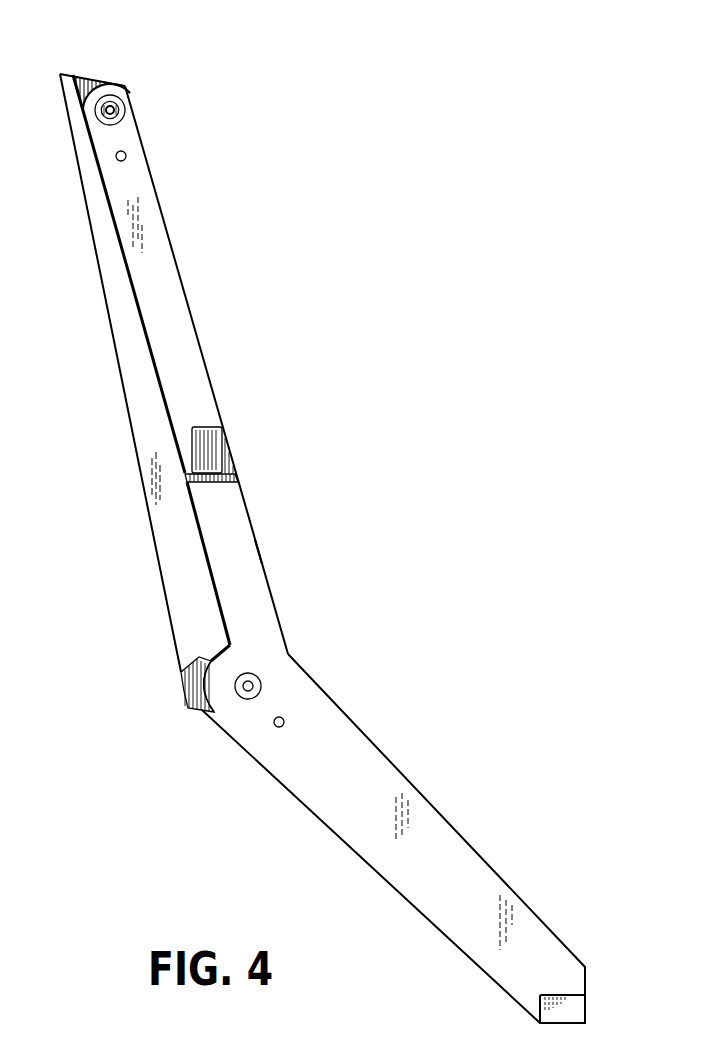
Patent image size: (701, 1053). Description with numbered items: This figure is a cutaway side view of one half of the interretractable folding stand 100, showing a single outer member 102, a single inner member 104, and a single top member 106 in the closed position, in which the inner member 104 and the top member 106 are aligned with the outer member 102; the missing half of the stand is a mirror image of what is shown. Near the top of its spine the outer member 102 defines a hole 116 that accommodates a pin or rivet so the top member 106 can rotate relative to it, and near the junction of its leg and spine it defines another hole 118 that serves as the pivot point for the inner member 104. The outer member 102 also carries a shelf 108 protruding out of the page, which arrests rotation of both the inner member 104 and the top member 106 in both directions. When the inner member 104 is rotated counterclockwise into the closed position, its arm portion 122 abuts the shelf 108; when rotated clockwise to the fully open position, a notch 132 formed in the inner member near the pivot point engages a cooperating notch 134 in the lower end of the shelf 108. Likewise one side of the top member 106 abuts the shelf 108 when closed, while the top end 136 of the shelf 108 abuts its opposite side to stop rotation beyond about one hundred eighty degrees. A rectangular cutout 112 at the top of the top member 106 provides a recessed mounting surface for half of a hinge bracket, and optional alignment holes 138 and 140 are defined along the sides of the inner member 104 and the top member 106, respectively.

The interretractable folding stand 100 is at (575, 1012).
The outer member 102 is at (103, 85).
The inner member 104 is at (425, 823).
The top member 106 is at (173, 323).
The shelf 108 is at (163, 532).
The rectangular cutout 112 is at (210, 452).
The hole 116 is at (117, 117).
The hole 118 is at (260, 682).
The arm portion 122 is at (273, 537).
The notch 132 is at (202, 713).
The cooperating notch 134 is at (192, 707).
The top end 136 is at (98, 82).
The alignment hole 138 is at (275, 727).
The alignment hole 140 is at (124, 160).